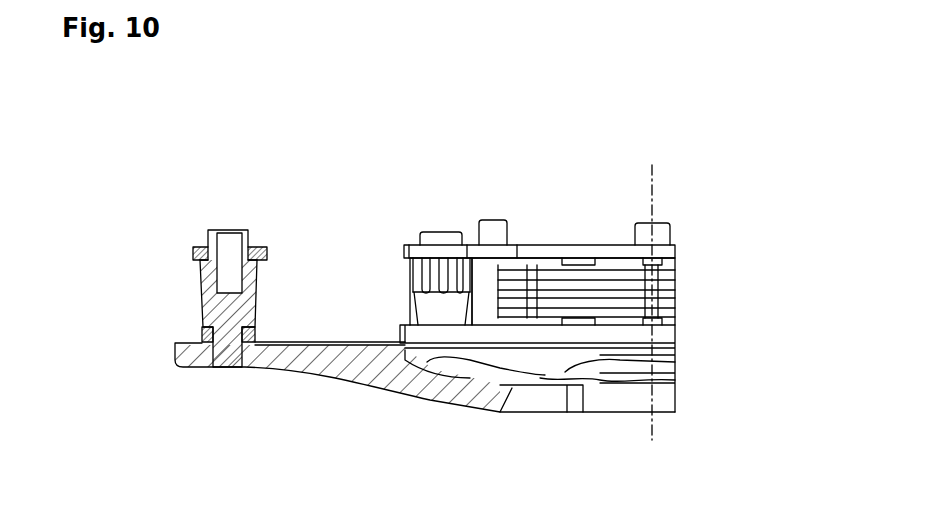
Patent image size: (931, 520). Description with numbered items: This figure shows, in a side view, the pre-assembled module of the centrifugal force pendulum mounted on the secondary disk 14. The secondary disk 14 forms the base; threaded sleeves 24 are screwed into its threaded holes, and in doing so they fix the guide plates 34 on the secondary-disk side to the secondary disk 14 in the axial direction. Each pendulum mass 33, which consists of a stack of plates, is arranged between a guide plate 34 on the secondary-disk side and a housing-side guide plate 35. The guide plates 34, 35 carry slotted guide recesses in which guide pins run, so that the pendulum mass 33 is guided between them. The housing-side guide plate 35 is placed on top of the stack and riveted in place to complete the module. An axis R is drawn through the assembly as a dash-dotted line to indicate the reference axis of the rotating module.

The secondary disk 14 is at (448, 385).
The threaded sleeve 24 is at (202, 298).
The pendulum mass 33 is at (600, 295).
The guide plate on the secondary-disk side 34 is at (195, 338).
The housing-side guide plate 35 is at (255, 247).
The axis of rotation R is at (647, 180).